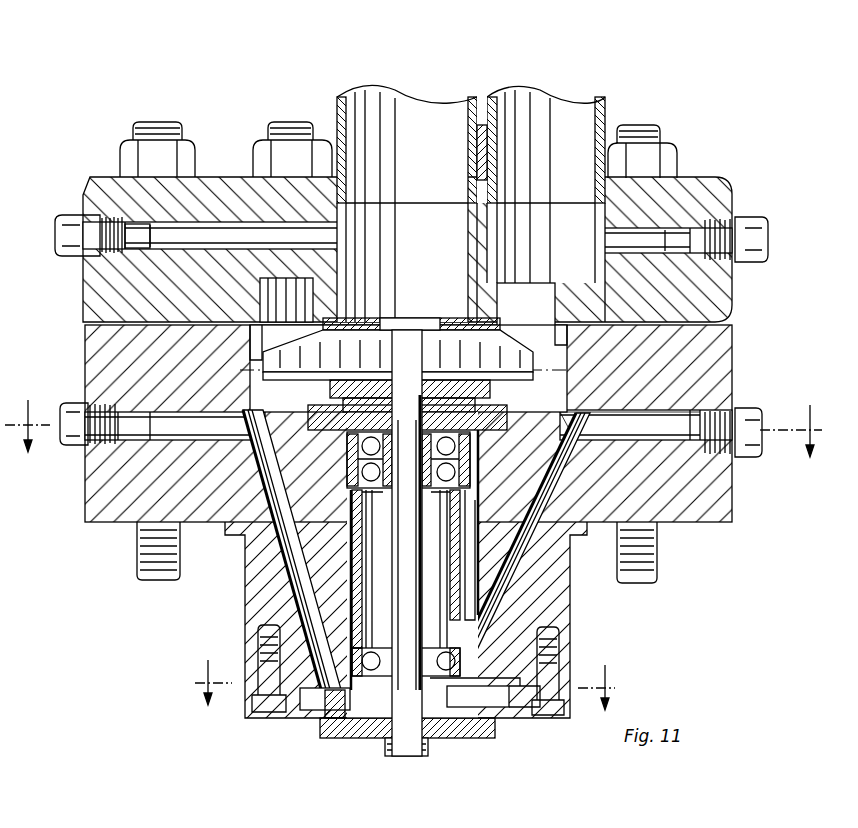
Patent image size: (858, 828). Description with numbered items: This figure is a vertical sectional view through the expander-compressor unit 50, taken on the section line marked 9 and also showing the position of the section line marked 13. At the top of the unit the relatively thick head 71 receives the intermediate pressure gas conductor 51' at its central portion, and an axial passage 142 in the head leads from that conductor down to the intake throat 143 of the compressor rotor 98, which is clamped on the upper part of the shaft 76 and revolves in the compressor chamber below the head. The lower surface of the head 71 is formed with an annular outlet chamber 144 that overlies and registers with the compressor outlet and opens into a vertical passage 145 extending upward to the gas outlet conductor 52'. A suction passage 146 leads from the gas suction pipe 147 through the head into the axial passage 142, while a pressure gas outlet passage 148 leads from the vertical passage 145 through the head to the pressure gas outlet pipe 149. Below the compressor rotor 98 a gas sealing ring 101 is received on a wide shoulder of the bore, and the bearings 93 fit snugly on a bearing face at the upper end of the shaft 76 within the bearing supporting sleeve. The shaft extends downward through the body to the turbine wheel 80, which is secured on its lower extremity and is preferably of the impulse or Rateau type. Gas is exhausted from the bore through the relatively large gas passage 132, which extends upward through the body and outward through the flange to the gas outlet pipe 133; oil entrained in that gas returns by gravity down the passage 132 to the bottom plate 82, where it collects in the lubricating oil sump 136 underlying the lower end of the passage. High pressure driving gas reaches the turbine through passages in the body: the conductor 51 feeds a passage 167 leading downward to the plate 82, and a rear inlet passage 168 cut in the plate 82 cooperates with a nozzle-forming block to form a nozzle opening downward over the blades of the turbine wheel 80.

The section line 9- 9 is at (418, 428).
The section line 13- 13 is at (407, 685).
The expander-compressor unit 50 is at (560, 612).
The conductor 51 is at (158, 408).
The intermediate pressure gas conductor 51' is at (407, 198).
The gas outlet conductor 52' is at (546, 198).
The head 71 is at (712, 306).
The shaft 76 is at (409, 543).
The turbine wheel 80 is at (495, 730).
The bottom plate 82 is at (248, 692).
The bearings 93 is at (378, 484).
The compressor rotor 98 is at (450, 324).
The gas sealing ring 101 is at (566, 420).
The gas passage 132 is at (533, 530).
The gas outlet pipe 133 is at (772, 392).
The lubricating oil sump 136 is at (485, 692).
The axial passage 142 is at (440, 192).
The intake throat 143 is at (440, 300).
The annular outlet chamber 144 is at (540, 300).
The vertical passage 145 is at (585, 192).
The suction passage 146 is at (205, 235).
The gas suction pipe 147 is at (72, 208).
The pressure gas outlet passage 148 is at (650, 238).
The pressure gas outlet pipe 149 is at (742, 222).
The passage 167 is at (278, 546).
The rear inlet passage 168 is at (330, 700).